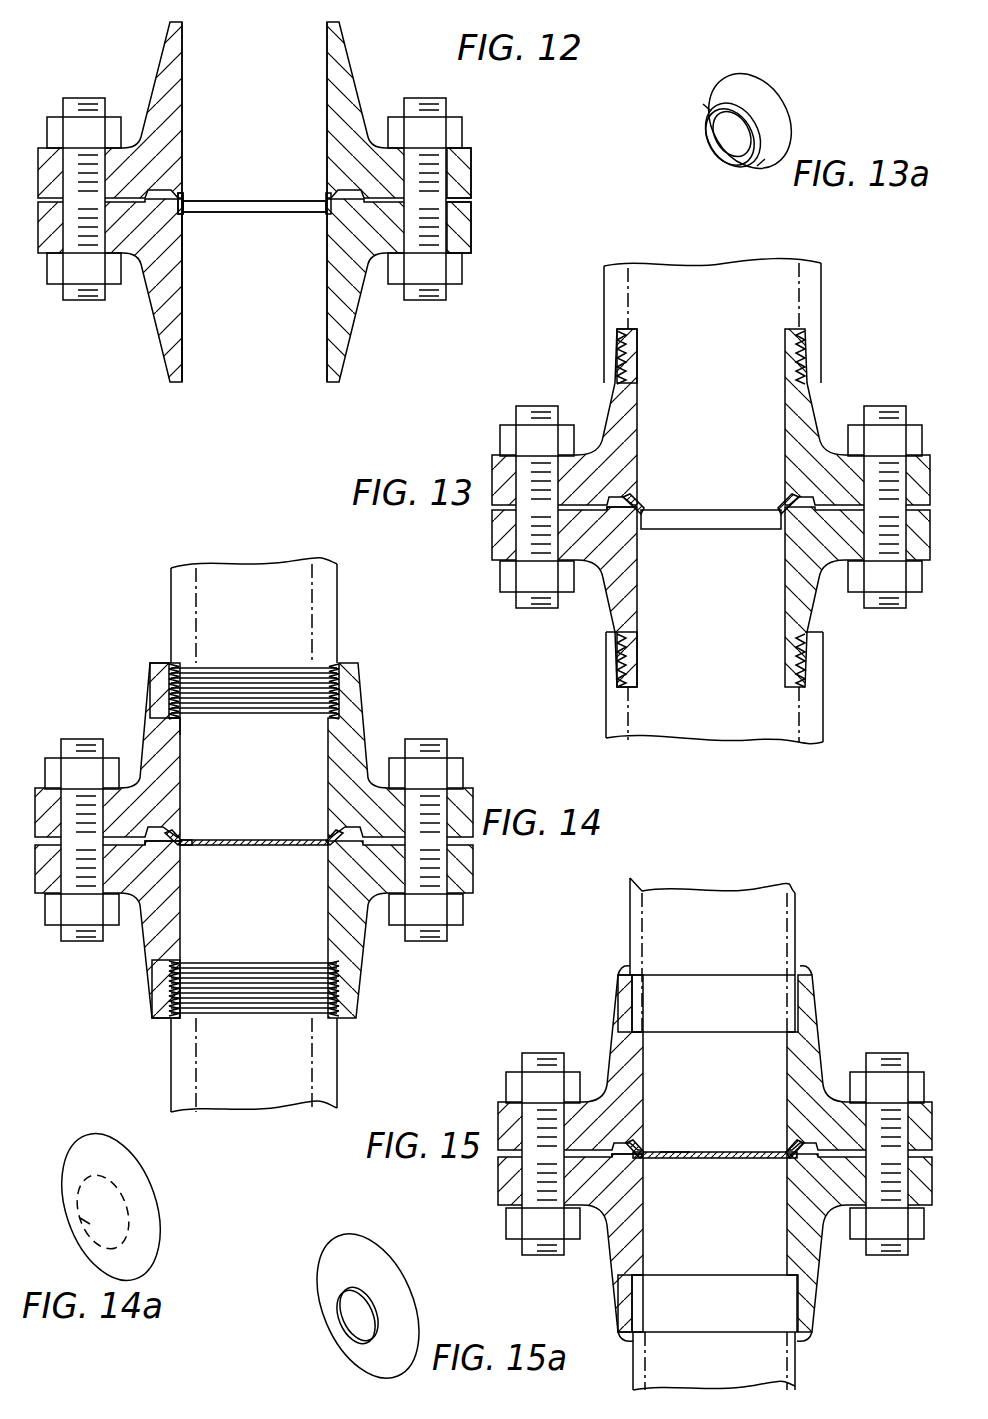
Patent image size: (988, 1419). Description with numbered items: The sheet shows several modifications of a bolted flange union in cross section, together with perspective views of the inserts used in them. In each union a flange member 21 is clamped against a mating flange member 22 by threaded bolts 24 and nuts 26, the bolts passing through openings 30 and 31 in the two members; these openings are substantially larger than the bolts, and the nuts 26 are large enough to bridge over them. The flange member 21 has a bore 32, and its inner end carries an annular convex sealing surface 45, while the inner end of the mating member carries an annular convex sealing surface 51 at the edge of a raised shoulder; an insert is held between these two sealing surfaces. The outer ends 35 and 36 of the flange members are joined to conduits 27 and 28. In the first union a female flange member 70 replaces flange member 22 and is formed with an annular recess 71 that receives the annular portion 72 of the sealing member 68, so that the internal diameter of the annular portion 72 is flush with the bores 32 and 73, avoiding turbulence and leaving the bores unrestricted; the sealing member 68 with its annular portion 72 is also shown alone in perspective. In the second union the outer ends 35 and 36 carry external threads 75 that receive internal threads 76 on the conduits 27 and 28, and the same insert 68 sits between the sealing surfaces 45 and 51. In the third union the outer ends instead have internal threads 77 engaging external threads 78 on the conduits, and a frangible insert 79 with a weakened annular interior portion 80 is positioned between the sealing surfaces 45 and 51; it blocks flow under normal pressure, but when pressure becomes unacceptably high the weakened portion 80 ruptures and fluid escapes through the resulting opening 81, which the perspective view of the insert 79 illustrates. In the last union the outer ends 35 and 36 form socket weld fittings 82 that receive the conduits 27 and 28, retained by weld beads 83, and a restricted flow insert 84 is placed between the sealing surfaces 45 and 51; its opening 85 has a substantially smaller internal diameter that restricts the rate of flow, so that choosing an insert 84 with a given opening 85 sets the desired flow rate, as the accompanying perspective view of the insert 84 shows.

In FIG. 12, the flange member 21 is at (354, 80).
In FIG. 13, the flange member 21 is at (812, 403).
In FIG. 14, the flange member 21 is at (360, 730).
In FIG. 15, the flange member 21 is at (815, 1022).
In FIG. 13, the flange member 22 is at (815, 605).
In FIG. 14, the flange member 22 is at (355, 960).
In FIG. 15, the flange member 22 is at (812, 1290).
In FIG. 14, the threaded bolt 24 is at (441, 748).
In FIG. 13, the nut 26 is at (507, 440).
In FIG. 13, the conduit 27 is at (826, 297).
In FIG. 14, the conduit 27 is at (340, 612).
In FIG. 15, the conduit 27 is at (802, 906).
In FIG. 13, the conduit 28 is at (826, 720).
In FIG. 14, the conduit 28 is at (342, 1041).
In FIG. 15, the conduit 28 is at (802, 1385).
In FIG. 12, the opening 30 is at (455, 172).
In FIG. 12, the opening 31 is at (455, 224).
In FIG. 12, the bore 32 is at (184, 135).
In FIG. 13, the outer end 35 is at (638, 352).
In FIG. 14, the outer end 35 is at (158, 689).
In FIG. 15, the outer end 35 is at (620, 991).
In FIG. 13, the outer end 36 is at (640, 655).
In FIG. 14, the outer end 36 is at (152, 1010).
In FIG. 15, the outer end 36 is at (618, 1303).
In FIG. 13, the annular convex sealing surface 45 is at (632, 506).
In FIG. 14, the annular convex sealing surface 45 is at (182, 839).
In FIG. 15, the annular convex sealing surface 45 is at (795, 1148).
In FIG. 13, the annular convex sealing surface 51 is at (634, 520).
In FIG. 14, the annular convex sealing surface 51 is at (176, 848).
In FIG. 15, the annular convex sealing surface 51 is at (641, 1160).
In FIG. 12, the sealing member 68 is at (235, 208).
In FIG. 13A, the sealing member 68 is at (763, 103).
In FIG. 13, the sealing member 68 is at (700, 522).
In FIG. 12, the female flange member 70 is at (356, 306).
In FIG. 12, the annular recess 71 is at (327, 218).
In FIG. 12, the annular portion 72 is at (183, 213).
In FIG. 13A, the annular portion 72 is at (760, 162).
In FIG. 12, the bore 73 is at (185, 300).
In FIG. 13A, the bore 73 is at (722, 140).
In FIG. 13, the external threads 75 is at (806, 358).
In FIG. 13, the internal threads 76 is at (622, 355).
In FIG. 14, the internal threads 77 is at (336, 688).
In FIG. 14, the external threads 78 is at (180, 723).
In FIG. 14, the frangible insert 79 is at (250, 840).
In FIG. 14A, the frangible insert 79 is at (154, 1250).
In FIG. 14, the weakened annular interior portion 80 is at (183, 846).
In FIG. 14A, the weakened annular interior portion 80 is at (104, 1192).
In FIG. 14A, the opening 81 is at (84, 1222).
In FIG. 15, the socket weld fitting 82 is at (640, 1009).
In FIG. 15, the weld bead 83 is at (806, 967).
In FIG. 15, the restricted flow insert 84 is at (668, 1152).
In FIG. 15A, the restricted flow insert 84 is at (397, 1296).
In FIG. 15, the opening 85 is at (685, 1156).
In FIG. 15A, the opening 85 is at (352, 1328).